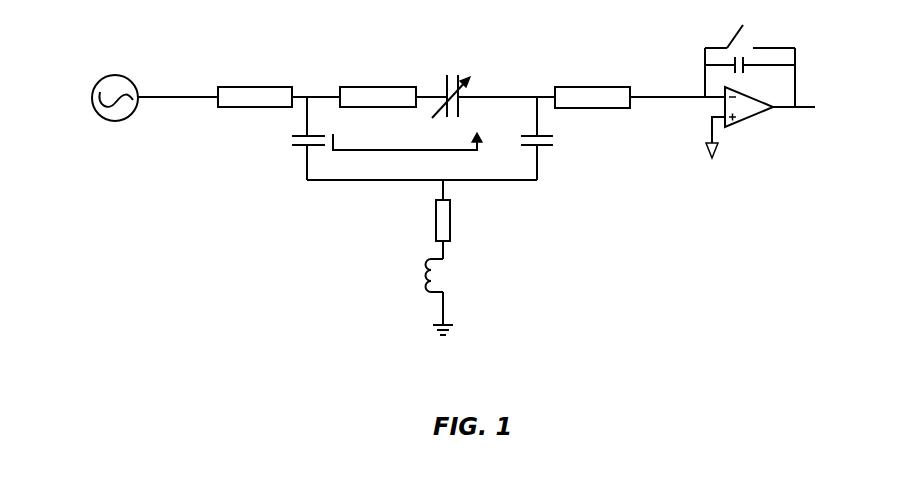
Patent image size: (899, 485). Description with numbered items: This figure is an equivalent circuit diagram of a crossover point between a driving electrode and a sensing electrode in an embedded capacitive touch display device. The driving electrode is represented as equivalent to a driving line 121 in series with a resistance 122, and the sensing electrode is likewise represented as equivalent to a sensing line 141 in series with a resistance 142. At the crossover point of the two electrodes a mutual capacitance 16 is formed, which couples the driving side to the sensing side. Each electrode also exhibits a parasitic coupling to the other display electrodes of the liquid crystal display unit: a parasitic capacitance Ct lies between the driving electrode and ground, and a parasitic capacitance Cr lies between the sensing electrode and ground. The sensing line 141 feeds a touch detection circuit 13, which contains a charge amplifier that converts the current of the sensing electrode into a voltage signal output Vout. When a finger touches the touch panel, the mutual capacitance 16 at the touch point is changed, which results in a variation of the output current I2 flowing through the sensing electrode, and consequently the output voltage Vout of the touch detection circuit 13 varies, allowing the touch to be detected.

The driving line 121 is at (155, 96).
The resistance 122 is at (255, 81).
The mutual capacitance 16 is at (451, 79).
The resistance 142 is at (592, 83).
The sensing line 141 is at (677, 80).
The touch detection circuit 13 is at (760, 96).
The parasitic capacitance Ct is at (291, 138).
The parasitic capacitance Cr is at (555, 138).
The output current I2 is at (416, 131).
The voltage signal output Vout is at (831, 134).